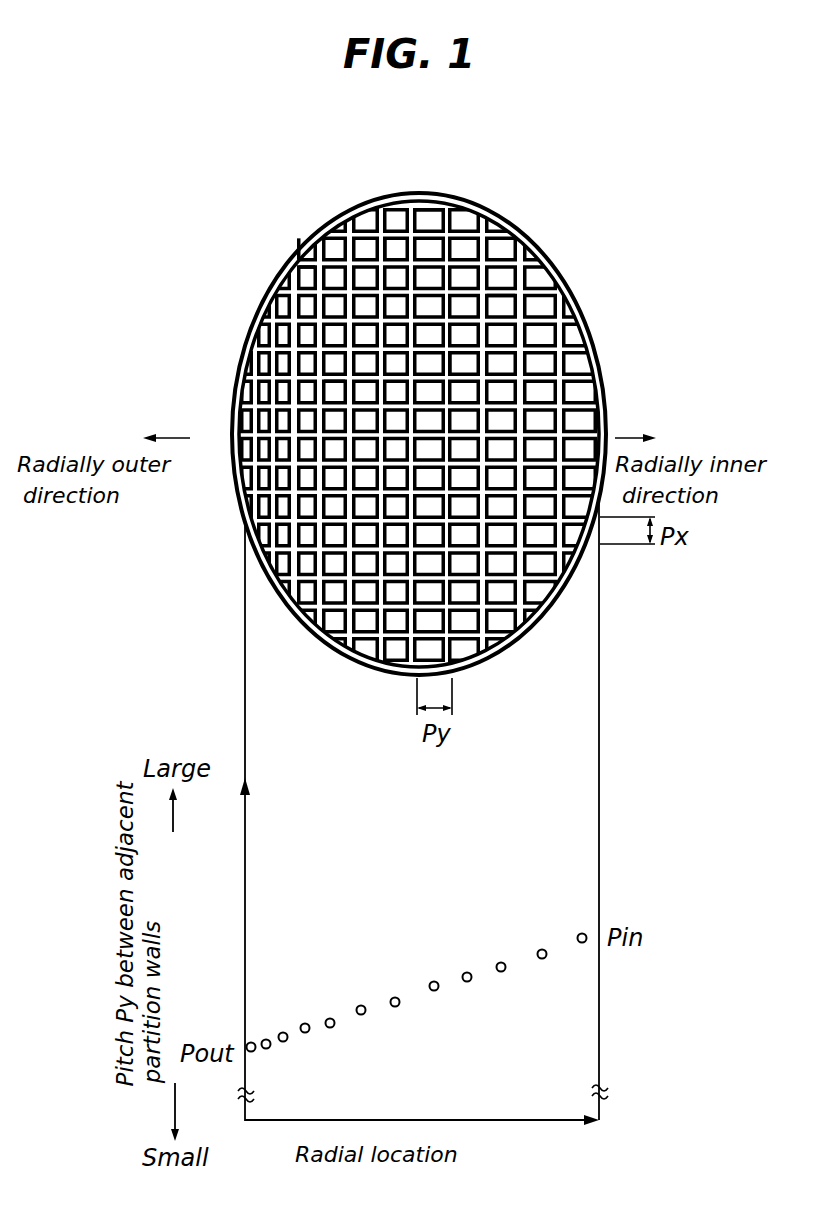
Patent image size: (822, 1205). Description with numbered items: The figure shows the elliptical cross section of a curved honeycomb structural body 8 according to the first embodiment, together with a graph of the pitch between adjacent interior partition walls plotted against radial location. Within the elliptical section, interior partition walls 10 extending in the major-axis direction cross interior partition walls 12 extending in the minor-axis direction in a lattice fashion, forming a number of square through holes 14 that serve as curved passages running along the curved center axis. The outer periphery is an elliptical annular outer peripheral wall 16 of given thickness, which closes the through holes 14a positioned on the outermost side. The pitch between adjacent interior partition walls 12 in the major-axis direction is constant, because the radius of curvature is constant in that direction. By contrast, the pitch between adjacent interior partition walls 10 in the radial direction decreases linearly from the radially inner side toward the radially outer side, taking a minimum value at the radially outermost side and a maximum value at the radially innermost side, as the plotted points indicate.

The curved honeycomb structural body 8 is at (508, 208).
The interior partition walls 10 is at (360, 303).
The interior partition walls 12 is at (393, 257).
The through holes 14 is at (405, 328).
The through holes positioned on an outermost side 14a is at (428, 213).
The outer peripheral wall 16 is at (305, 243).